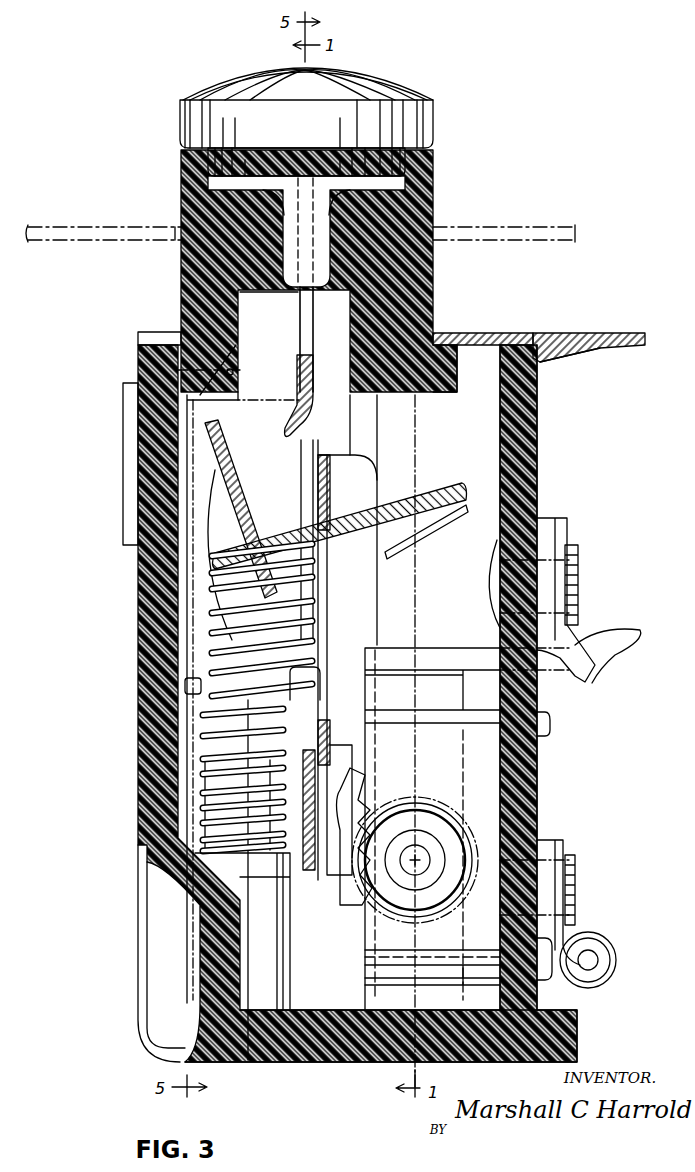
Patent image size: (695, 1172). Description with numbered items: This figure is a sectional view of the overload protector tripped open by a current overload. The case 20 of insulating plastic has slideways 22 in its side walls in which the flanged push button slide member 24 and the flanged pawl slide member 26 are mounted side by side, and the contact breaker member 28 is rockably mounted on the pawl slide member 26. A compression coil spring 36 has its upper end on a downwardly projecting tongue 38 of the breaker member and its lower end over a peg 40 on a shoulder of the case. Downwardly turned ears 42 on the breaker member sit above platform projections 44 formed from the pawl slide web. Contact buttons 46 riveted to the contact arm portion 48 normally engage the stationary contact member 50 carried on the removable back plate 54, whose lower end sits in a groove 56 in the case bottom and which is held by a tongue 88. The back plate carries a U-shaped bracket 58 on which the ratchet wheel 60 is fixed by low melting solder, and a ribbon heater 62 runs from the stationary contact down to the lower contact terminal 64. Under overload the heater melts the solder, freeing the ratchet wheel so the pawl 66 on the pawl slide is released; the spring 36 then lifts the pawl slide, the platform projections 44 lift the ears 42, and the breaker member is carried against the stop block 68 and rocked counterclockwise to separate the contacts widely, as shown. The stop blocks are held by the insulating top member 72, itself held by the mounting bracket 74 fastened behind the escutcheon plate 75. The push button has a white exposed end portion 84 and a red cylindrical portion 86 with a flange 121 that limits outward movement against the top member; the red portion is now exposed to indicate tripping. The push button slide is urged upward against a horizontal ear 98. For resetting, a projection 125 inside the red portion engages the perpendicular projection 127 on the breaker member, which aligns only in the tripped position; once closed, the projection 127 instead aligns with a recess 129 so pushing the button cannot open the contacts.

The case 20 is at (138, 718).
The slideways 22 is at (377, 435).
The push button slide member 24 is at (320, 318).
The pawl slide member 26 is at (378, 470).
The contact breaker member 28 is at (350, 537).
The coil spring 36 is at (215, 642).
The tongue 38 is at (240, 620).
The peg 40 is at (227, 805).
The ears 42 is at (220, 622).
The platform projections 44 is at (190, 692).
The contact buttons 46 is at (425, 519).
The contact arm portion 48 is at (452, 485).
The stationary contact member 50 is at (470, 648).
The back plate 54 is at (530, 447).
The groove 56 is at (545, 1012).
The U-shaped bracket 58 is at (548, 733).
The ratchet wheel 60 is at (470, 830).
The ribbon heater 62 is at (365, 697).
The lower contact terminal 64 is at (600, 967).
The pawl 66 is at (345, 790).
The stop block 68 is at (197, 507).
The top member 72 is at (476, 345).
The mounting bracket 74 is at (583, 333).
The escutcheon plate 75 is at (153, 227).
The exposed end portion 84 is at (387, 82).
The cylindrical portion 86 is at (433, 200).
The tongue 88 is at (563, 358).
The horizontal ear 98 is at (188, 700).
The flange 121 is at (448, 393).
The projection 125 is at (183, 340).
The perpendicular projection 127 is at (123, 466).
The recess 129 is at (241, 307).